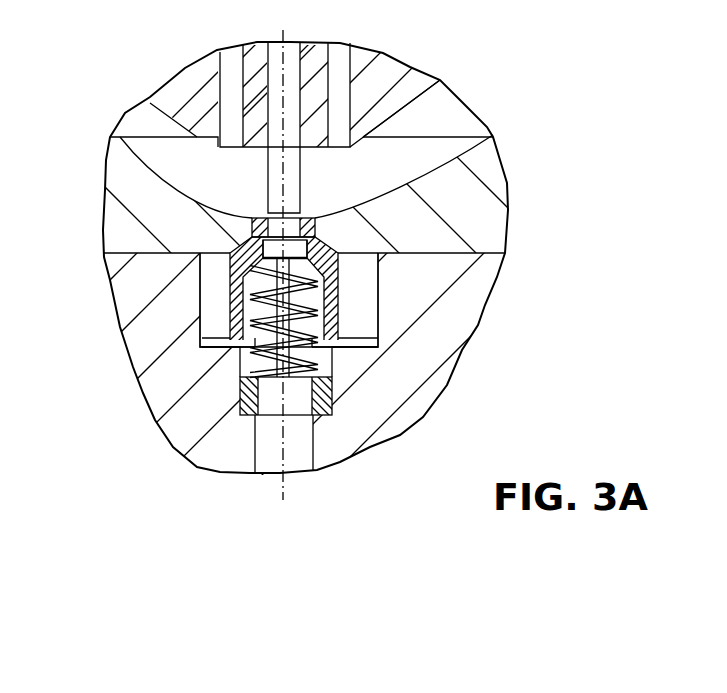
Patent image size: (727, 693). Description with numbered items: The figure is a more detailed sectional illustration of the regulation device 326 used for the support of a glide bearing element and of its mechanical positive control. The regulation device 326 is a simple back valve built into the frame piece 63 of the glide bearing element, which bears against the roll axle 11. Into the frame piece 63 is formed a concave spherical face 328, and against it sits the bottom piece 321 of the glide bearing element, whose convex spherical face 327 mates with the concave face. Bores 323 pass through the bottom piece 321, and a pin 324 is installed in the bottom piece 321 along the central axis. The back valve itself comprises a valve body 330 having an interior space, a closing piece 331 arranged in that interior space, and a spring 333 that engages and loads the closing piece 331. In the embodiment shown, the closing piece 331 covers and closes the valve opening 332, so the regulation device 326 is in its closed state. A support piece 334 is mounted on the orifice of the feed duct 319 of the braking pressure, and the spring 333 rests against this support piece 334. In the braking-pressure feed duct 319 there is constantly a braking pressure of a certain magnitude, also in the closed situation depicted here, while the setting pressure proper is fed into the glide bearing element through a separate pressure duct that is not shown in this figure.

The roll axle 11 is at (440, 263).
The frame piece of the glide bearing element 63 is at (456, 187).
The feed duct of the braking pressure 319 is at (268, 440).
The bottom piece of the glide bearing element 321 is at (383, 80).
The bores 323 is at (232, 80).
The pin 324 is at (275, 80).
The regulation device 326 is at (499, 333).
The convex spherical face 327 is at (435, 110).
The concave spherical face 328 is at (201, 184).
The valve body 330 is at (248, 300).
The closing piece 331 is at (237, 252).
The valve opening 332 is at (243, 243).
The spring 333 is at (205, 341).
The support piece 334 is at (332, 400).